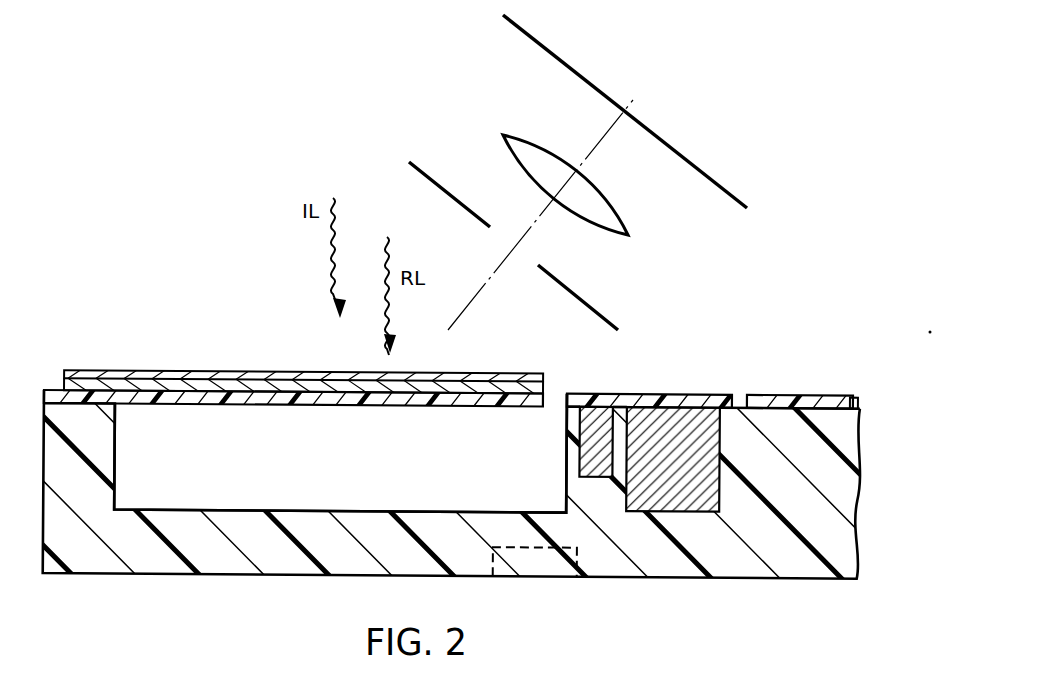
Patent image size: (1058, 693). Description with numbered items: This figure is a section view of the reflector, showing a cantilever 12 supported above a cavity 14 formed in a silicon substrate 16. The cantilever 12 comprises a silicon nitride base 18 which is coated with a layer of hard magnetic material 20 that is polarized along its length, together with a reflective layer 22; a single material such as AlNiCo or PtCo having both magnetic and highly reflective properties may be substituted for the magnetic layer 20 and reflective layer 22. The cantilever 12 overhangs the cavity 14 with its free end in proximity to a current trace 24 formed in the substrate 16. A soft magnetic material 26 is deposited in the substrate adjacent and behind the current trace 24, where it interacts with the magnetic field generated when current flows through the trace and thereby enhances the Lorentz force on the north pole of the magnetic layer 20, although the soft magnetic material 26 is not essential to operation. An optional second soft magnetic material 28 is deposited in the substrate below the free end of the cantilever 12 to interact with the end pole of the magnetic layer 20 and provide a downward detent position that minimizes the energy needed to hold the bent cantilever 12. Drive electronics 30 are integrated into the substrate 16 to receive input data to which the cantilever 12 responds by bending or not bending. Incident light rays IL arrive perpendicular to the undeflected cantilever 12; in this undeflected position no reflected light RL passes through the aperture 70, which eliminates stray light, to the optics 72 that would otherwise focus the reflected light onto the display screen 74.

The cantilever 12 is at (323, 362).
The cavity 14 is at (313, 502).
The silicon substrate 16 is at (132, 555).
The silicon nitride base 18 is at (113, 392).
The layer of hard magnetic material 20 is at (170, 377).
The reflective layer 22 is at (218, 380).
The current trace 24 is at (593, 422).
The soft magnetic material 26 is at (693, 420).
The second soft magnetic material 28 is at (557, 579).
The drive electronics 30 is at (790, 396).
The aperture 70 is at (445, 188).
The optics 72 is at (528, 135).
The display screen 74 is at (578, 75).